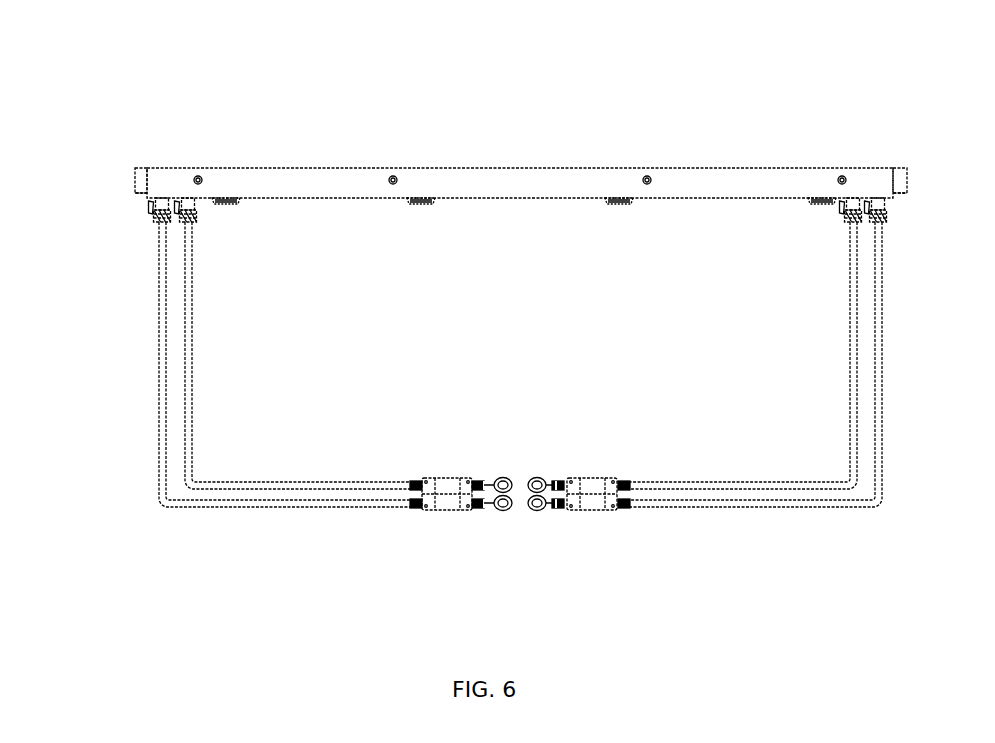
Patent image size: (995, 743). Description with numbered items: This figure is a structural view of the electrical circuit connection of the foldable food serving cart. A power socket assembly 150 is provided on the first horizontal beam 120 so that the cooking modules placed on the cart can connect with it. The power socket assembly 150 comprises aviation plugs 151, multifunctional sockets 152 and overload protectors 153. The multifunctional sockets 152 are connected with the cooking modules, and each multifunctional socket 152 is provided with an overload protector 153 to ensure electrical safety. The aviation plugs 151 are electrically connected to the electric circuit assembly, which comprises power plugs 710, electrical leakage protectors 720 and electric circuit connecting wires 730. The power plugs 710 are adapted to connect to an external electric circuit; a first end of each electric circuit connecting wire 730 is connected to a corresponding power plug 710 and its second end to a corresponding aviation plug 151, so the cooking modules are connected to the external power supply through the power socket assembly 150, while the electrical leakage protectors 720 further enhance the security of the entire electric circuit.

The first horizontal beam 120 is at (723, 183).
The power socket assembly 150 is at (526, 134).
The aviation plugs 151 is at (152, 208).
The multifunctional sockets 152 is at (198, 180).
The overload protectors 153 is at (232, 200).
The power plugs 710 is at (503, 512).
The electrical leakage protectors 720 is at (457, 500).
The electric circuit connecting wires 730 is at (188, 437).